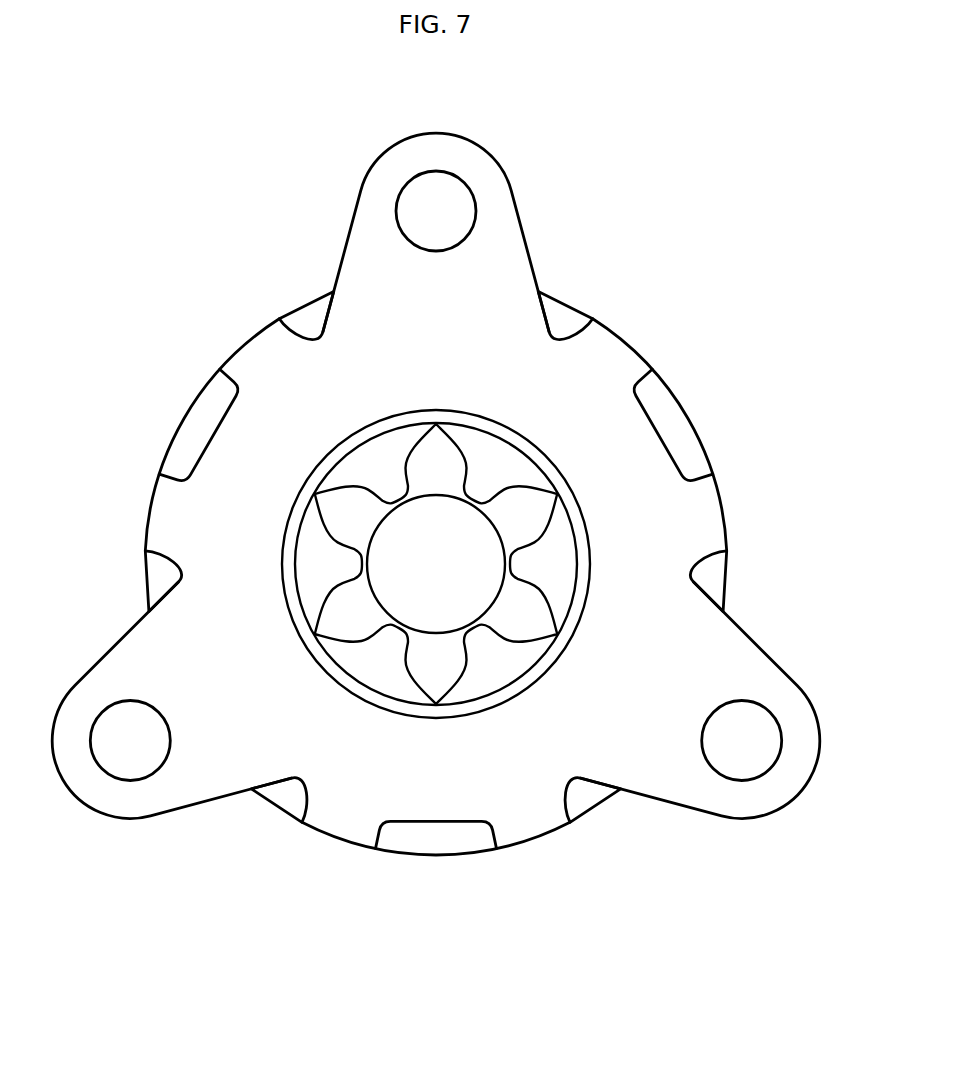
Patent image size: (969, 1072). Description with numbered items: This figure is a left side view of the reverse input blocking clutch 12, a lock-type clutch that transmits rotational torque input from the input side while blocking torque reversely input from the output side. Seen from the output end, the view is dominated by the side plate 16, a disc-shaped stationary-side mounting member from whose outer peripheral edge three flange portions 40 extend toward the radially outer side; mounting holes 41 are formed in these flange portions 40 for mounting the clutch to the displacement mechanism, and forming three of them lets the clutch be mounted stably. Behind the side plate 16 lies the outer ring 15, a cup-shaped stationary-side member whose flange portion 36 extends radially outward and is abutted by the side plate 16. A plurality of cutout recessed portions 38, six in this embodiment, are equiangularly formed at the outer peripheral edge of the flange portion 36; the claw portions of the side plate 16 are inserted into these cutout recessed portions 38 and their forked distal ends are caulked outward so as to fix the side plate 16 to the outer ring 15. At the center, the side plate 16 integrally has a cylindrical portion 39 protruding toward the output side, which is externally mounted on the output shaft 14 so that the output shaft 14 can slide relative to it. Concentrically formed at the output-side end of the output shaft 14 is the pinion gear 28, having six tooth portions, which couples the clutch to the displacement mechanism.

The reverse input blocking clutch 12 is at (694, 234).
The output shaft 14 is at (493, 420).
The outer ring 15 is at (175, 403).
The side plate 16 is at (475, 587).
The pinion gear 28 is at (463, 667).
The flange portion 36 is at (437, 845).
The cutout recessed portion 38 is at (439, 593).
The cylindrical portion 39 is at (367, 435).
The flange portion 40 is at (488, 172).
The mounting hole 41 is at (417, 203).